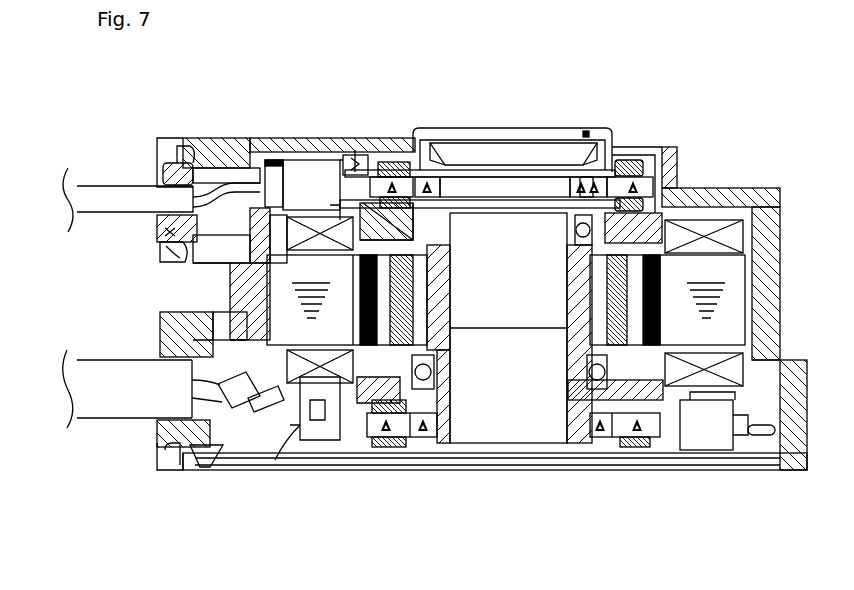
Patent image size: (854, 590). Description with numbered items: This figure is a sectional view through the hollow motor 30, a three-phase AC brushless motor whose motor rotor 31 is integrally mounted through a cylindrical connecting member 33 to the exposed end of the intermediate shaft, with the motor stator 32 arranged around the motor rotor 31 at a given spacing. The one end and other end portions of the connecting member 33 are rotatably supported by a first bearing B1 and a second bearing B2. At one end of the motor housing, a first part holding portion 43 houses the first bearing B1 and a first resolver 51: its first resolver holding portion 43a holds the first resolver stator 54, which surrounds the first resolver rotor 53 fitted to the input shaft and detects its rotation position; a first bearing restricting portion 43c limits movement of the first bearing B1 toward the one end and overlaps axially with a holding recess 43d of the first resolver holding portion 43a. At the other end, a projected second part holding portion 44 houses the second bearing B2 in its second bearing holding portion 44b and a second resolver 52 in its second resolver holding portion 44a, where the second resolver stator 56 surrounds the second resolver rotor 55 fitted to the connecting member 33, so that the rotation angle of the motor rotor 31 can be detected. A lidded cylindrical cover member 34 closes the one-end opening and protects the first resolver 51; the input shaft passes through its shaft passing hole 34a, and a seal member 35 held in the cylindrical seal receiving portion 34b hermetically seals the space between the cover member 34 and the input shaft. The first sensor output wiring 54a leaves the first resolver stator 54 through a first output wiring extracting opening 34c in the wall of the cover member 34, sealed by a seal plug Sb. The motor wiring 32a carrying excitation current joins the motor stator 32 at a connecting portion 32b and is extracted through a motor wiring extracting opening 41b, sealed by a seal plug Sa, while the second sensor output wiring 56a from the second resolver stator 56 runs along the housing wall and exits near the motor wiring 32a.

The hollow motor 30 is at (769, 184).
The motor rotor 31 is at (748, 259).
The motor stator 32 is at (735, 330).
The motor wiring 32a is at (113, 415).
The connecting portion 32b is at (283, 428).
The connecting member 33 is at (720, 302).
The cover member 34 is at (268, 140).
The shaft passing hole 34a is at (422, 140).
The seal receiving portion 34b is at (446, 148).
The first output wiring extracting opening 34c is at (167, 165).
The seal member 35 is at (586, 131).
The motor wiring extracting opening 41b is at (160, 345).
The first part holding portion 43 is at (661, 149).
The first resolver holding portion 43a is at (668, 156).
The first bearing restricting portion 43c is at (634, 176).
The holding recess 43d is at (647, 149).
The second part holding portion 44 is at (381, 468).
The second resolver holding portion 44a is at (369, 437).
The second bearing holding portion 44b is at (360, 440).
The first resolver 51 is at (376, 132).
The second resolver 52 is at (665, 470).
The first resolver rotor 53 is at (380, 162).
The first resolver stator 54 is at (352, 155).
The first sensor output wiring 54a is at (140, 192).
The second resolver rotor 55 is at (586, 440).
The second resolver stator 56 is at (622, 440).
The second sensor output wiring 56a is at (767, 437).
The first bearing B1 is at (368, 186).
The second bearing B2 is at (423, 390).
The seal plug Sa is at (167, 468).
The seal plug Sb is at (160, 243).